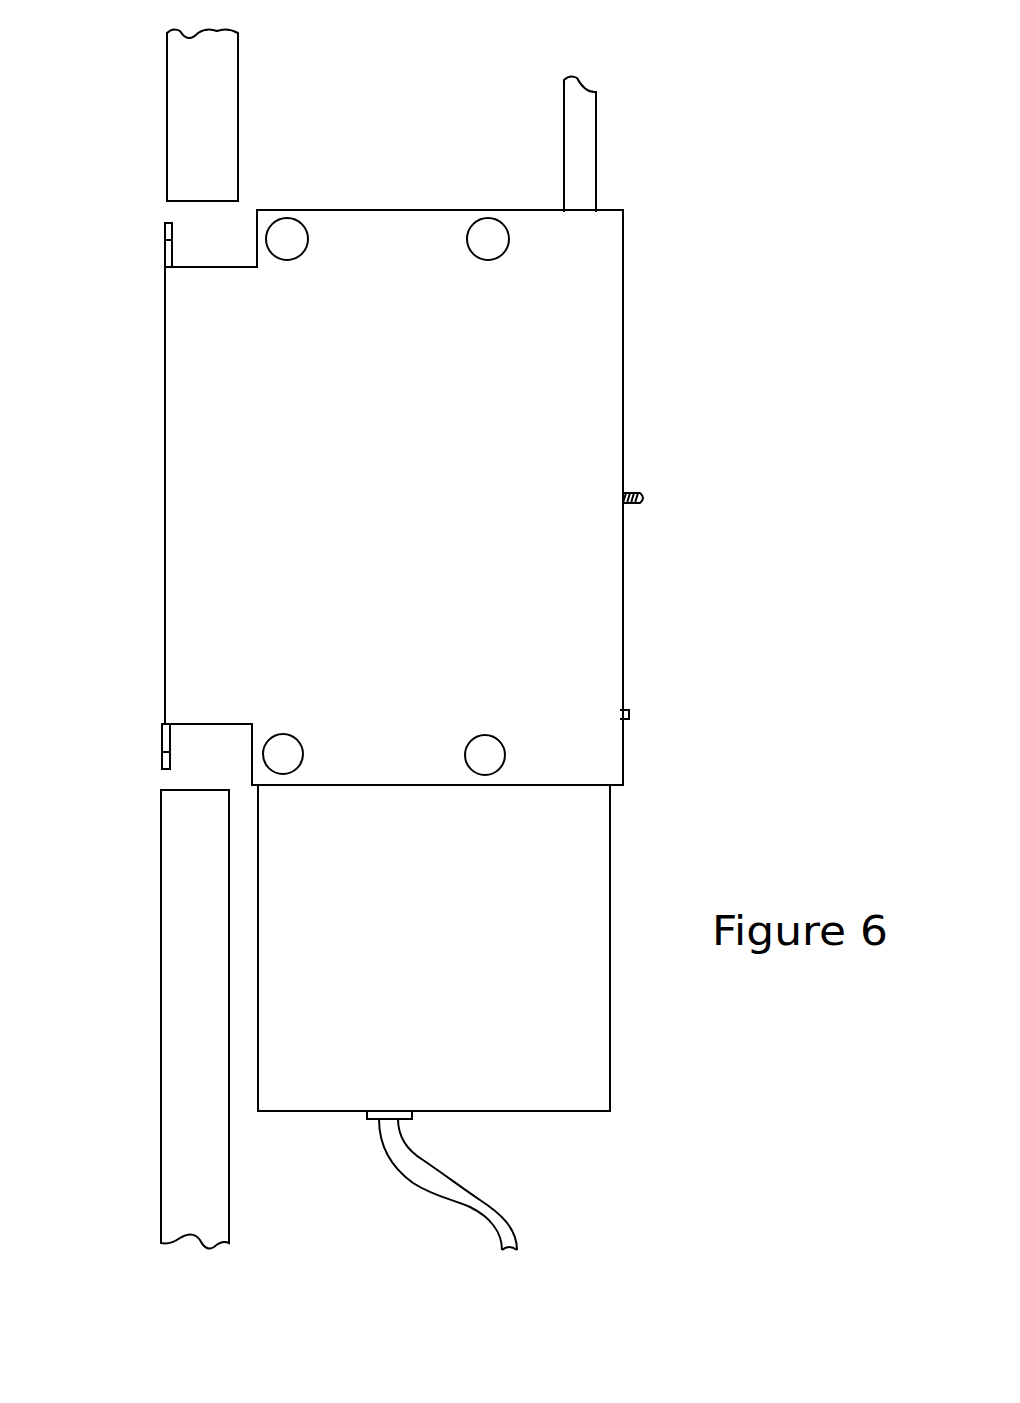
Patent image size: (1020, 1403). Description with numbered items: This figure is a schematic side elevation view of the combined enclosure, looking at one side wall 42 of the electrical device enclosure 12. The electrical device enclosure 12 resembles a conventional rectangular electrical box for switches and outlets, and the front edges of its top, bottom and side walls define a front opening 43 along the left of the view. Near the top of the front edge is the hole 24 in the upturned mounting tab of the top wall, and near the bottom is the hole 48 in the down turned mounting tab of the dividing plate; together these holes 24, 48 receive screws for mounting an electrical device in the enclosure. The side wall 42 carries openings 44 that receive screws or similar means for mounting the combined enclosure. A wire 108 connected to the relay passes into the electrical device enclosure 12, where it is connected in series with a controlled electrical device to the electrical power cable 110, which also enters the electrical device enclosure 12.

The electrical device enclosure 12 is at (658, 374).
The hole 24 is at (165, 242).
The side wall 42 is at (448, 538).
The front opening 43 is at (163, 474).
The openings 44 is at (495, 222).
The hole 48 is at (163, 752).
The wire 108 is at (597, 117).
The electrical power cable 110 is at (505, 1202).